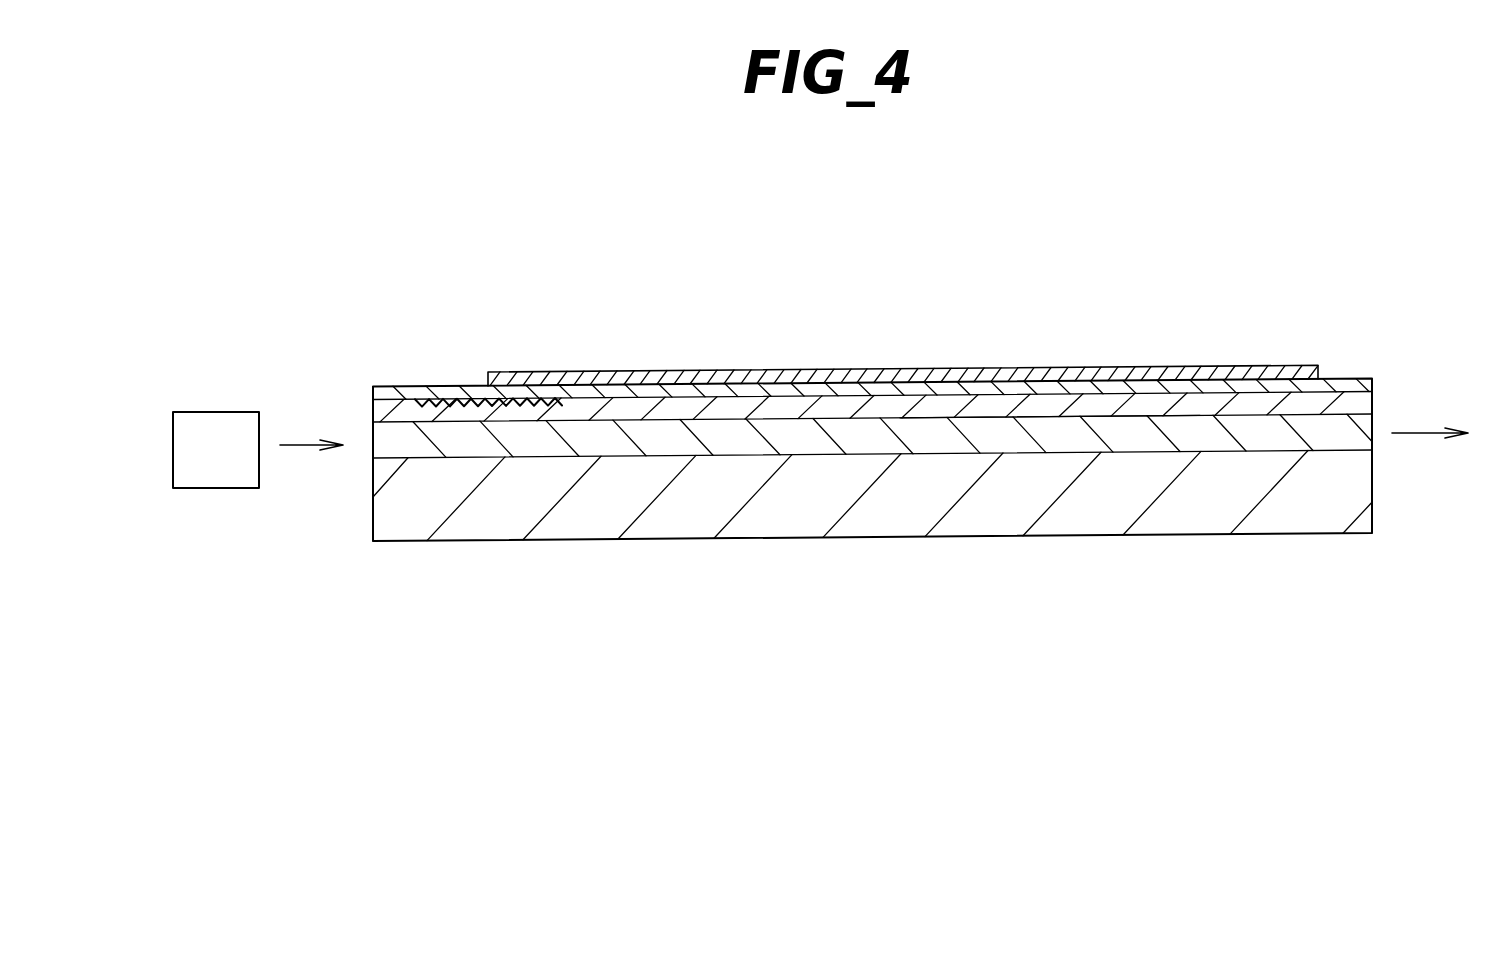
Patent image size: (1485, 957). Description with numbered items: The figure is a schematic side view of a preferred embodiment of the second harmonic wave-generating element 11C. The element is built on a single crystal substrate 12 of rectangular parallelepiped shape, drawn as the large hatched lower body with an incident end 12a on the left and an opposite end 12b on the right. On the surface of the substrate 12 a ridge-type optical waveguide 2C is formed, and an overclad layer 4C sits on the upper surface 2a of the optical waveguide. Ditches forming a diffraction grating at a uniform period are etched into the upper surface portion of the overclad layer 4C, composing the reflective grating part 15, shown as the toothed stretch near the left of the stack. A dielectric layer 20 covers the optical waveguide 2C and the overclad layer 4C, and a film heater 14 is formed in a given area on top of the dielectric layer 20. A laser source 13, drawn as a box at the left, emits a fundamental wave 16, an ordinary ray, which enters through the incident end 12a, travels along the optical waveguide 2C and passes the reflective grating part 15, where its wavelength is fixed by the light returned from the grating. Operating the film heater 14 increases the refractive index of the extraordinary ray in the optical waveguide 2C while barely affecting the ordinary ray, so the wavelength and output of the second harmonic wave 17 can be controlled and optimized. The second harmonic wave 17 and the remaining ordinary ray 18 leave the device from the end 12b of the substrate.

The second harmonic wave-generating element 11C is at (1300, 342).
The single crystal substrate 12 is at (880, 503).
The incident end 12a is at (372, 496).
The end of the substrate 12b is at (1373, 488).
The optical waveguide 2C is at (872, 435).
The upper surface of the optical waveguide 2a is at (1048, 418).
The overclad layer 4C is at (717, 405).
The dielectric layer 20 is at (640, 392).
The film heater 14 is at (812, 370).
The reflective grating part 15 is at (567, 368).
The laser source 13 is at (208, 412).
The fundamental wave 16 is at (299, 443).
The second harmonic wave 17 is at (1430, 404).
The ordinary ray 18 is at (1415, 433).